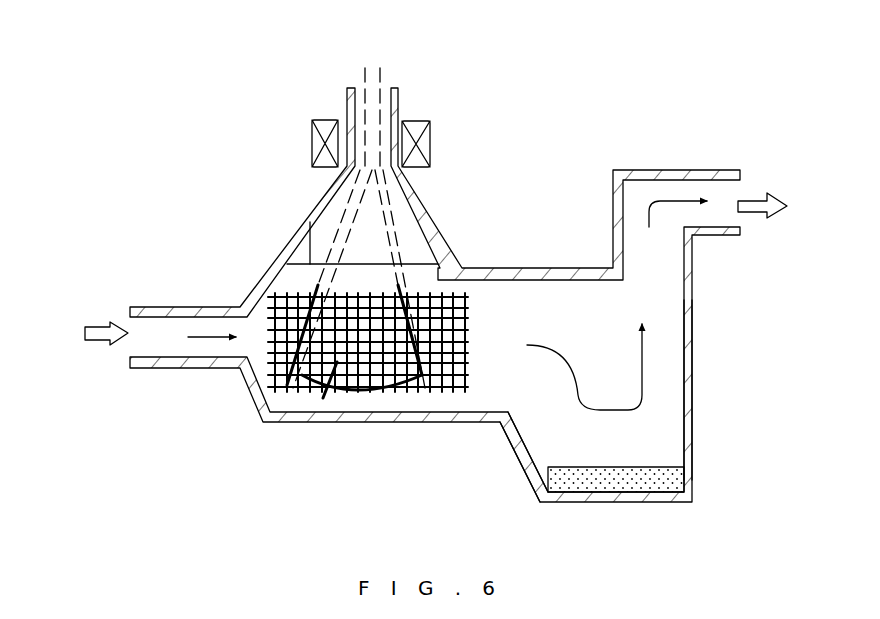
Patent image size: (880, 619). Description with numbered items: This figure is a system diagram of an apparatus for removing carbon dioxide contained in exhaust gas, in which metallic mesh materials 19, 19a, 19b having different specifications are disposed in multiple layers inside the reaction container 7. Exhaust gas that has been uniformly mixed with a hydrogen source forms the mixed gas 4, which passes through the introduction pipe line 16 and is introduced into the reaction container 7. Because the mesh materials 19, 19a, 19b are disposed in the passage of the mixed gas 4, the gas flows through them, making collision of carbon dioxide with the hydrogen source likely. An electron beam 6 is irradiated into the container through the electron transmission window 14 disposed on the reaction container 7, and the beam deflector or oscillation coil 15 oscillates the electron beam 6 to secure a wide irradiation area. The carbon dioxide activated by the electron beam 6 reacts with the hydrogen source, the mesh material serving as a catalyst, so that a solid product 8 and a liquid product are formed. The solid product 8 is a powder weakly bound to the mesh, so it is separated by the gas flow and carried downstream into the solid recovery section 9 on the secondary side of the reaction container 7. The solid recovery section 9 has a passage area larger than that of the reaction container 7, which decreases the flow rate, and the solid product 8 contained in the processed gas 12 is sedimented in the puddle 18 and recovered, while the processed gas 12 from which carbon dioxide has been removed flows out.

The mixed gas 4 is at (100, 325).
The electron beam 6 is at (390, 217).
The reaction container 7 is at (445, 240).
The solid product 8 is at (643, 467).
The solid recovery section 9 is at (692, 370).
The processed gas 12 is at (755, 195).
The electron transmission window 14 is at (310, 222).
The beam deflector (oscillation coil) 15 is at (313, 121).
The introduction pipe line 16 is at (183, 307).
The puddle 18 is at (513, 453).
The mesh material 19 is at (353, 392).
The mesh material 19a is at (295, 392).
The mesh material 19b is at (325, 380).